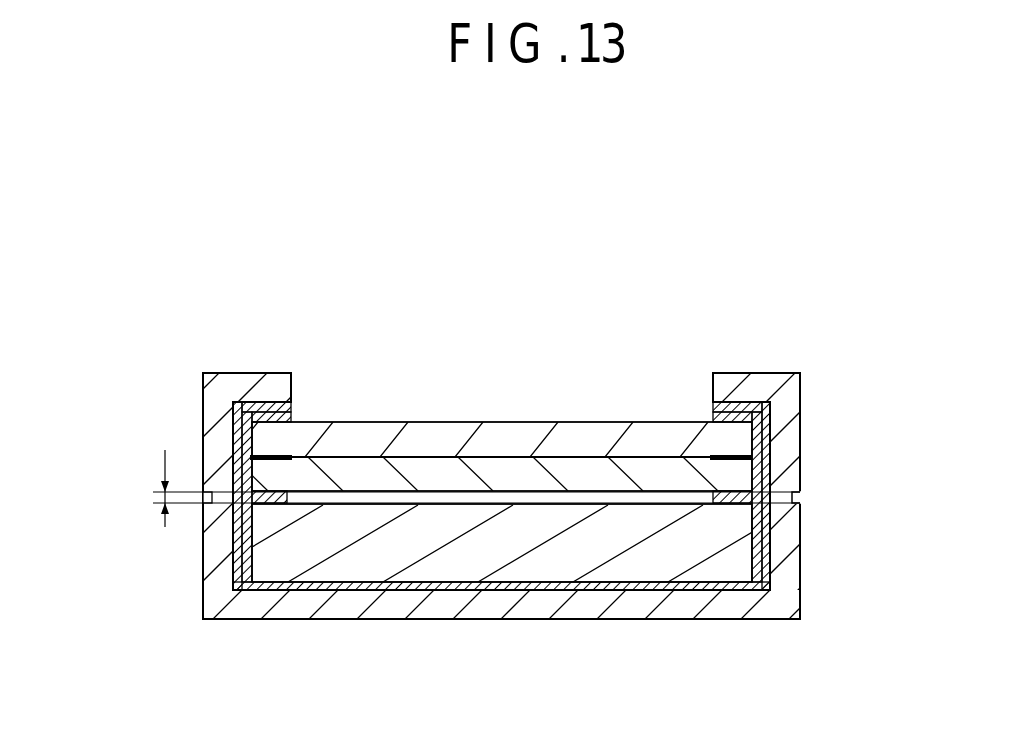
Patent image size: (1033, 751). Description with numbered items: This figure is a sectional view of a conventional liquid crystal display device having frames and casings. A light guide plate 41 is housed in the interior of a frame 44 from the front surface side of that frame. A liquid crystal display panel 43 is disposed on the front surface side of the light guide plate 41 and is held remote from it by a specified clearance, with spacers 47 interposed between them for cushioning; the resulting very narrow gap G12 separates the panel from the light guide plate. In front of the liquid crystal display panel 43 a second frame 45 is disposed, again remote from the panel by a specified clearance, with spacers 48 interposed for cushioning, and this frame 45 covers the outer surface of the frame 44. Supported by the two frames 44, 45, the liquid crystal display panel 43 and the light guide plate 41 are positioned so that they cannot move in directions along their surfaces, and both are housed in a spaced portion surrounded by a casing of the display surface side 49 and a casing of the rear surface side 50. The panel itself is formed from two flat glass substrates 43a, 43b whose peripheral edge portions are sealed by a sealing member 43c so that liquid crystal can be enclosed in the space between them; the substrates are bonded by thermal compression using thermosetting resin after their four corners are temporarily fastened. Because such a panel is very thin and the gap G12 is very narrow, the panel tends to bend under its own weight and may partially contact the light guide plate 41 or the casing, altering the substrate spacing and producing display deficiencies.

The light guide plate 41 is at (445, 557).
The liquid crystal display panel 43 is at (541, 350).
The glass substrate 43a is at (503, 467).
The glass substrate 43b is at (587, 436).
The sealing member 43c is at (745, 430).
The frame 44 is at (703, 587).
The frame 45 is at (768, 563).
The spacer 47 is at (757, 524).
The spacer 48 is at (763, 444).
The casing of the display surface side 49 is at (790, 390).
The casing of the rear surface side 50 is at (288, 610).
The gap G12 is at (165, 498).